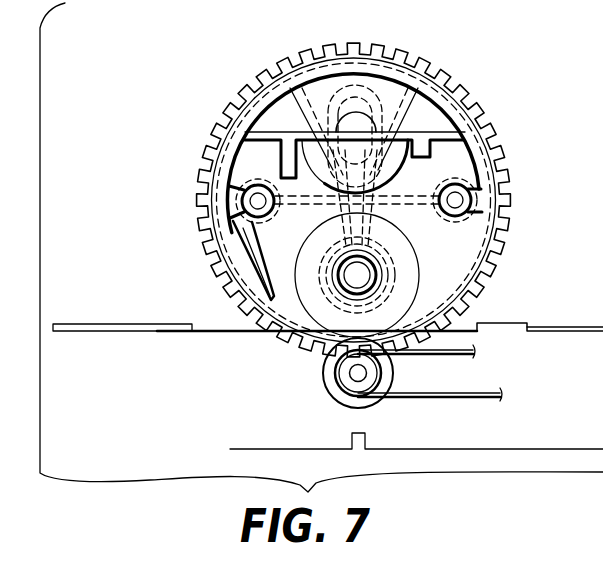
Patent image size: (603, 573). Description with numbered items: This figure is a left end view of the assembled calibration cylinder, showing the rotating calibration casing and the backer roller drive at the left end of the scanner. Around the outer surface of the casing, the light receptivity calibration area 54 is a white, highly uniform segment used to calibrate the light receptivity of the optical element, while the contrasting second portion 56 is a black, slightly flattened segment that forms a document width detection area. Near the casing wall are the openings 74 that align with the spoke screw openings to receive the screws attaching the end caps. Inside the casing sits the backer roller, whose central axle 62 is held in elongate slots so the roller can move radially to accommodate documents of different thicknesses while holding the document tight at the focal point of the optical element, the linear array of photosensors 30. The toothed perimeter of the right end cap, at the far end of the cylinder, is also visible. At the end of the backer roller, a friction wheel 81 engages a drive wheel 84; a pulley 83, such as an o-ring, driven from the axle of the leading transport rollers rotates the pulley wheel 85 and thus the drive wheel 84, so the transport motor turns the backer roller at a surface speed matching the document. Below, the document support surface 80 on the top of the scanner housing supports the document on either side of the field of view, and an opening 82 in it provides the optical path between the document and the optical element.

The photosensors 30 is at (366, 436).
The light receptivity calibration area 54 is at (506, 236).
The second portion 56 is at (250, 265).
The central axle 62 is at (362, 277).
The openings 74 is at (466, 193).
The document support surface 80 is at (578, 331).
The friction wheel 81 is at (323, 232).
The opening 82 is at (470, 317).
The pulley 83 is at (474, 393).
The drive wheel 84 is at (340, 395).
The pulley wheel 85 is at (381, 374).